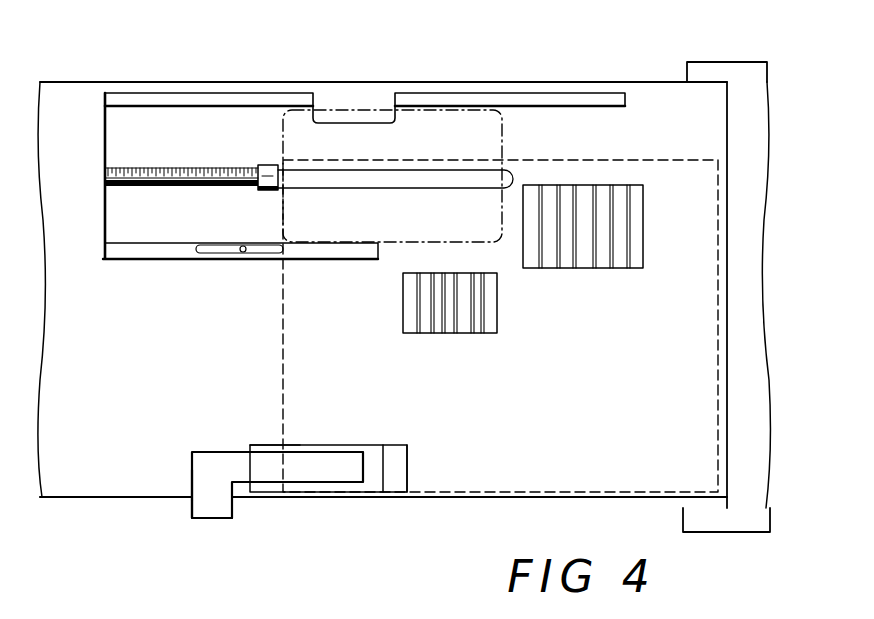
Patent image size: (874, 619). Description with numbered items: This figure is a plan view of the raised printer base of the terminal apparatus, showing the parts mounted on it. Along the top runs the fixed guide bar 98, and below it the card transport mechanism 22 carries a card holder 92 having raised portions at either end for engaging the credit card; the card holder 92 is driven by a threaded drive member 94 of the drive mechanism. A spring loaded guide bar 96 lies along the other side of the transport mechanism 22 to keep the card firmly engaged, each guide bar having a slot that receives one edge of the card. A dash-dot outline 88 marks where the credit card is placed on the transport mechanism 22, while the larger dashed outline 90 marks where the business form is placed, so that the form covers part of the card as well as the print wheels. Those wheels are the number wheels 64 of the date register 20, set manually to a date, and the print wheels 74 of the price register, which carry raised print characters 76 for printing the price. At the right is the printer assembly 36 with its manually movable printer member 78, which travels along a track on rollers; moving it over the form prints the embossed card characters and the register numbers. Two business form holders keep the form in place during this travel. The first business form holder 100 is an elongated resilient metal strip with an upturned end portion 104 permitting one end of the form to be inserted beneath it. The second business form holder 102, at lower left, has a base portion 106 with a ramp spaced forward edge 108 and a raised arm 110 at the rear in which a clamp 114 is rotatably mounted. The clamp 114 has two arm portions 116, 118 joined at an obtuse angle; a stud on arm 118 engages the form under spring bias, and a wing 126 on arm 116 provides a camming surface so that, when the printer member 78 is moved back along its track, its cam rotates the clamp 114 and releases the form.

The date register 20 is at (499, 304).
The card transport mechanism 22 is at (168, 222).
The printer assembly 36 is at (743, 80).
The number wheels 64 is at (410, 335).
The print wheels 74 is at (632, 262).
The raised print characters 76 is at (538, 208).
The movable printer member 78 is at (763, 314).
The dashed line 88 is at (283, 140).
The dashed line 90 is at (283, 376).
The card holder 92 is at (270, 182).
The threaded drive member 94 is at (190, 180).
The spring loaded guide bar 96 is at (357, 261).
The fixed guide bar 98 is at (209, 100).
The first business form holder 100 is at (212, 256).
The second business form holder 102 is at (223, 460).
The upturned end portion 104 is at (290, 258).
The base portion 106 is at (352, 445).
The ramp spaced forward edge 108 is at (398, 477).
The raised arm 110 is at (259, 446).
The clamp 114 is at (253, 474).
The arm portion 116 is at (194, 481).
The arm portion 118 is at (333, 468).
The wing 126 is at (206, 503).